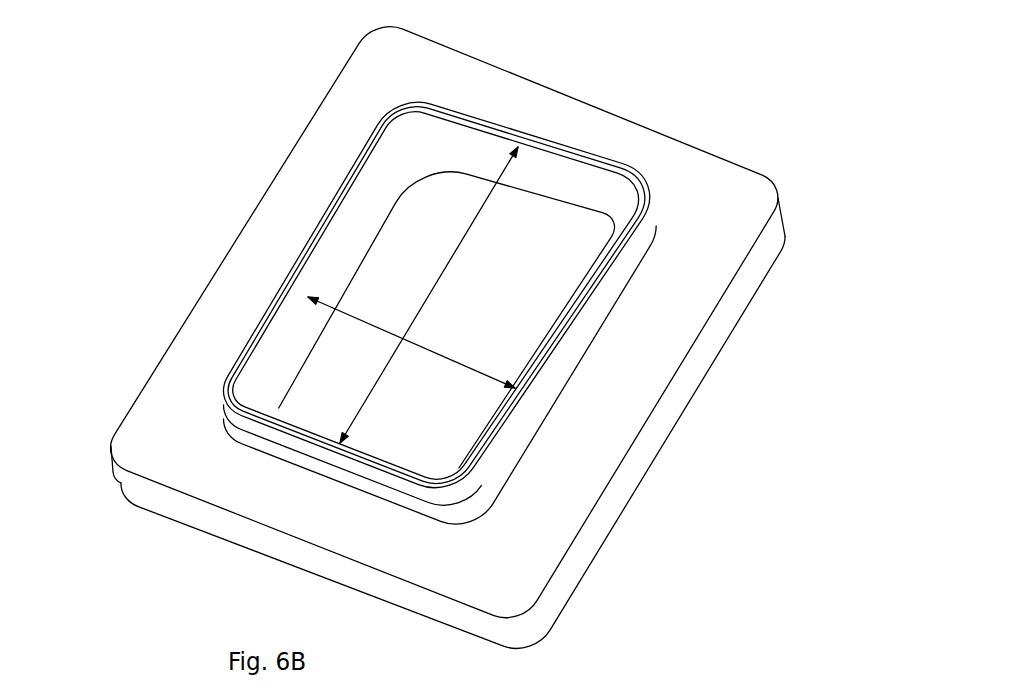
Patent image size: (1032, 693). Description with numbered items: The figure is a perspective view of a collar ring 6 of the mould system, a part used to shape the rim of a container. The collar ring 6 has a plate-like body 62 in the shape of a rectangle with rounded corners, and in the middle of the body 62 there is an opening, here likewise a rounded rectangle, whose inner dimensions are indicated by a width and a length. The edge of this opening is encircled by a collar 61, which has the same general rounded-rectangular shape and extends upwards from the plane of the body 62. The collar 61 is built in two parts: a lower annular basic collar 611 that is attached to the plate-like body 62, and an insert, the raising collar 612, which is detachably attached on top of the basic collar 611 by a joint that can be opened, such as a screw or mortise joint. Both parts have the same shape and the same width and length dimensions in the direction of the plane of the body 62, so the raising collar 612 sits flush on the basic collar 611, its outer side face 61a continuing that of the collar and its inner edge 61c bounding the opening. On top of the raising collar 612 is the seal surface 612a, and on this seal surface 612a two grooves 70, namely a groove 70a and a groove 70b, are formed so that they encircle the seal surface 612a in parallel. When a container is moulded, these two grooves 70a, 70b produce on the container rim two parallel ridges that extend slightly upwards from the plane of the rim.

The collar ring 6 is at (228, 147).
The collar 61 is at (627, 263).
The basic collar 611 is at (547, 398).
The raising collar 612 is at (590, 330).
The side surface of body 61a is at (362, 178).
The seal surface 612a is at (436, 260).
The rim of raised portion 61c is at (600, 160).
The body 62 is at (401, 88).
The grooves 70 is at (140, 348).
The groove 70a is at (248, 344).
The groove 70b is at (236, 378).